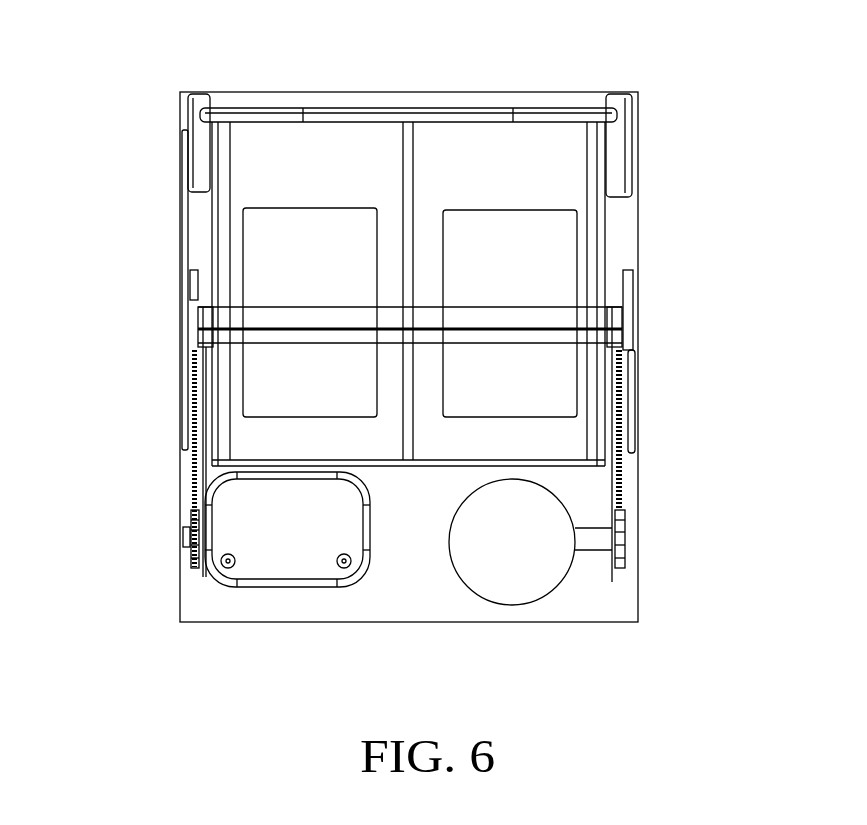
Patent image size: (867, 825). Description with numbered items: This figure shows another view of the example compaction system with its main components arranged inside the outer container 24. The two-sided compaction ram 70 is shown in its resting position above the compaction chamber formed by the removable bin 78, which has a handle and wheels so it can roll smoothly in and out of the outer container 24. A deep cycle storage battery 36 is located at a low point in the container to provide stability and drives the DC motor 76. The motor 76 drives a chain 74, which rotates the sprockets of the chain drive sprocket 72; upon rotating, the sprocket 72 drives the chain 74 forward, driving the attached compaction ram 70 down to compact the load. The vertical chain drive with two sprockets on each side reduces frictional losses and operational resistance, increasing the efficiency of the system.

The outer container 24 is at (176, 227).
The removable bin 78 is at (293, 163).
The compaction ram 70 is at (540, 249).
The chain 74 is at (627, 402).
The chain drive sprocket 72 is at (634, 533).
The DC motor 76 is at (504, 547).
The storage battery 36 is at (243, 525).